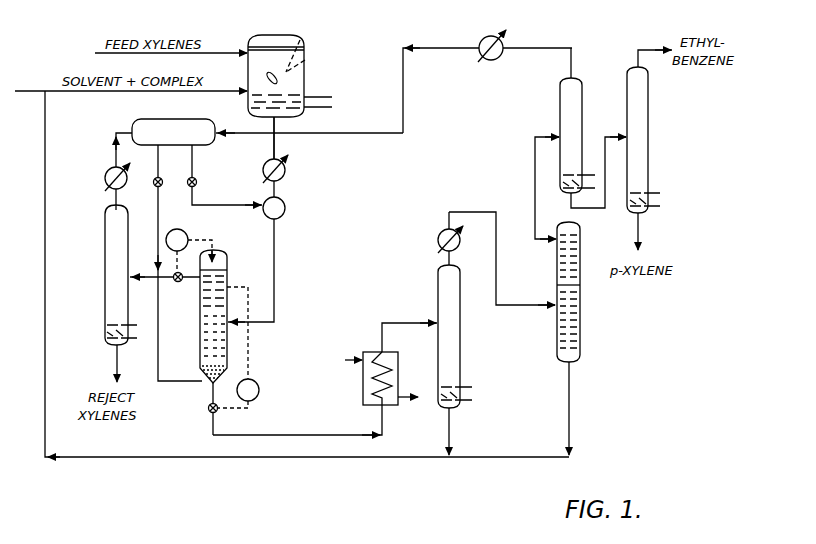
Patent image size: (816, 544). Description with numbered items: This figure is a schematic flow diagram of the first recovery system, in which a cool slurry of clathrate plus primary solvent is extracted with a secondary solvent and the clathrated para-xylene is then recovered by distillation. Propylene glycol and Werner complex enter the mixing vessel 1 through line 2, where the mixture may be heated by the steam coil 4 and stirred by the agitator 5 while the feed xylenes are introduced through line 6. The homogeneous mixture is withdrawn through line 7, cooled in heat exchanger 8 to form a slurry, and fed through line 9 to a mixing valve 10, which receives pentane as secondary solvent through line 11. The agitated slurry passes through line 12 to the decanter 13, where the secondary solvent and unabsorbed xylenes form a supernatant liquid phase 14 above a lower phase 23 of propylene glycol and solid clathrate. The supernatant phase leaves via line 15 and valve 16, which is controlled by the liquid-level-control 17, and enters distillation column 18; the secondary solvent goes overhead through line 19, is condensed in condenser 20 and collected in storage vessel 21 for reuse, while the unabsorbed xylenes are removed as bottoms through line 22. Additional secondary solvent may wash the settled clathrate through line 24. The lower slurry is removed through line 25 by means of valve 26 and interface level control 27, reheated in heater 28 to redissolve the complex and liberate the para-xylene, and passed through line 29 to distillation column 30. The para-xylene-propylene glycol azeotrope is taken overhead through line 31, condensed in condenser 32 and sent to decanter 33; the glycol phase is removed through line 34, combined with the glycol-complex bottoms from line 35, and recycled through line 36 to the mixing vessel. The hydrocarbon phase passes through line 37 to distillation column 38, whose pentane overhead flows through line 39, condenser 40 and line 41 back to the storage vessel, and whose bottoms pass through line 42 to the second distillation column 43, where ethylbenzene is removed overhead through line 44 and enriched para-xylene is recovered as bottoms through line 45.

The mixing vessel 1 is at (291, 65).
The line 2 is at (36, 90).
The steam coil 4 is at (310, 110).
The agitator 5 is at (306, 58).
The line 6 is at (236, 50).
The line 7 is at (273, 148).
The heat exchanger 8 is at (285, 172).
The line 9 is at (276, 190).
The mixing valve 10 is at (285, 210).
The line 11 is at (228, 204).
The line 12 is at (276, 252).
The decanter 13 is at (217, 309).
The supernatant liquid phase 14 is at (220, 282).
The line 15 is at (148, 280).
The valve 16 is at (183, 281).
The liquid-level-control 17 is at (184, 232).
The distillation column 18 is at (106, 228).
The line 19 is at (112, 143).
The condenser 20 is at (105, 176).
The storage vessel 21 is at (186, 112).
The line 22 is at (114, 352).
The lower phase 23 is at (208, 330).
The line 24 is at (157, 367).
The line 25 is at (300, 432).
The valve 26 is at (208, 411).
The interface level control 27 is at (256, 386).
The heater 28 is at (362, 388).
The line 29 is at (416, 310).
The distillation column 30 is at (452, 334).
The line 31 is at (486, 211).
The condenser 32 is at (440, 238).
The decanter 33 is at (582, 316).
The line 34 is at (574, 410).
The line 35 is at (452, 428).
The line 36 is at (45, 292).
The line 37 is at (534, 157).
The distillation column 38 is at (574, 100).
The line 39 is at (572, 44).
The condenser 40 is at (490, 60).
The line 41 is at (400, 136).
The line 42 is at (592, 208).
The second distillation column 43 is at (646, 163).
The line 44 is at (650, 46).
The line 45 is at (642, 228).